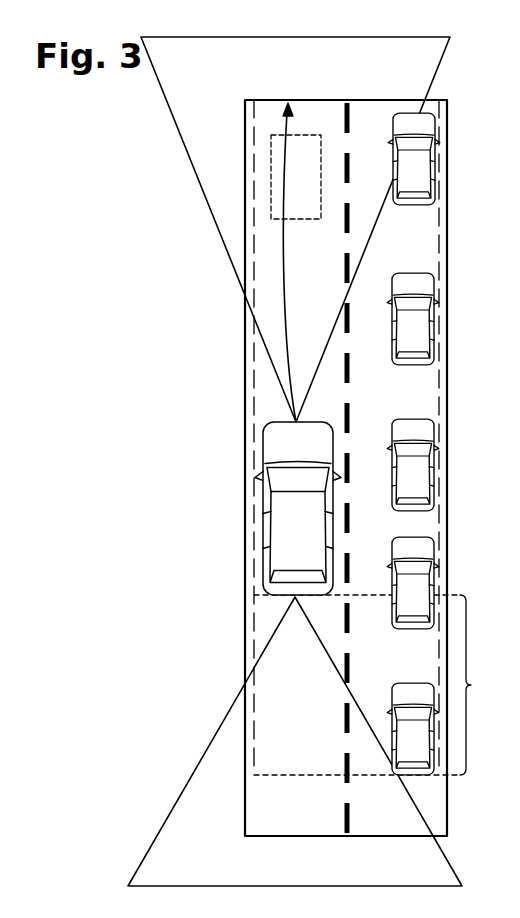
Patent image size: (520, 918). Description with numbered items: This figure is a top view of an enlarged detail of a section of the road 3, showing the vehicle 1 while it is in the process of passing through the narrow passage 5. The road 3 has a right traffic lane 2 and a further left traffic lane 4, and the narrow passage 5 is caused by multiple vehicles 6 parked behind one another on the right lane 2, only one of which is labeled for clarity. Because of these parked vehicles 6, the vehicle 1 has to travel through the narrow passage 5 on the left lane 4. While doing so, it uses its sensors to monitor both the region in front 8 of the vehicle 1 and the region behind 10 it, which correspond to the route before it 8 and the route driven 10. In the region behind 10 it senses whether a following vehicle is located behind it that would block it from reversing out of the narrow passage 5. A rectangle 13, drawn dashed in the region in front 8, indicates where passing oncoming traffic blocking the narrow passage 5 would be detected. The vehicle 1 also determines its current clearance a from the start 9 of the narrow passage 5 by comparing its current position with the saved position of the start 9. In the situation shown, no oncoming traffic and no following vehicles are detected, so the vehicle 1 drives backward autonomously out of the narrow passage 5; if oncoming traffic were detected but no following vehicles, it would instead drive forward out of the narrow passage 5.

The vehicle 1 is at (300, 536).
The right traffic lane 2 is at (430, 805).
The road 3 is at (225, 342).
The left traffic lane 4 is at (268, 615).
The narrow passage 5 is at (253, 412).
The parked vehicles 6 is at (415, 328).
The region in front 8 is at (228, 257).
The start of the narrow passage 9 is at (320, 777).
The region behind 10 is at (222, 810).
The rectangle 13 is at (311, 134).
The current clearance a is at (479, 685).